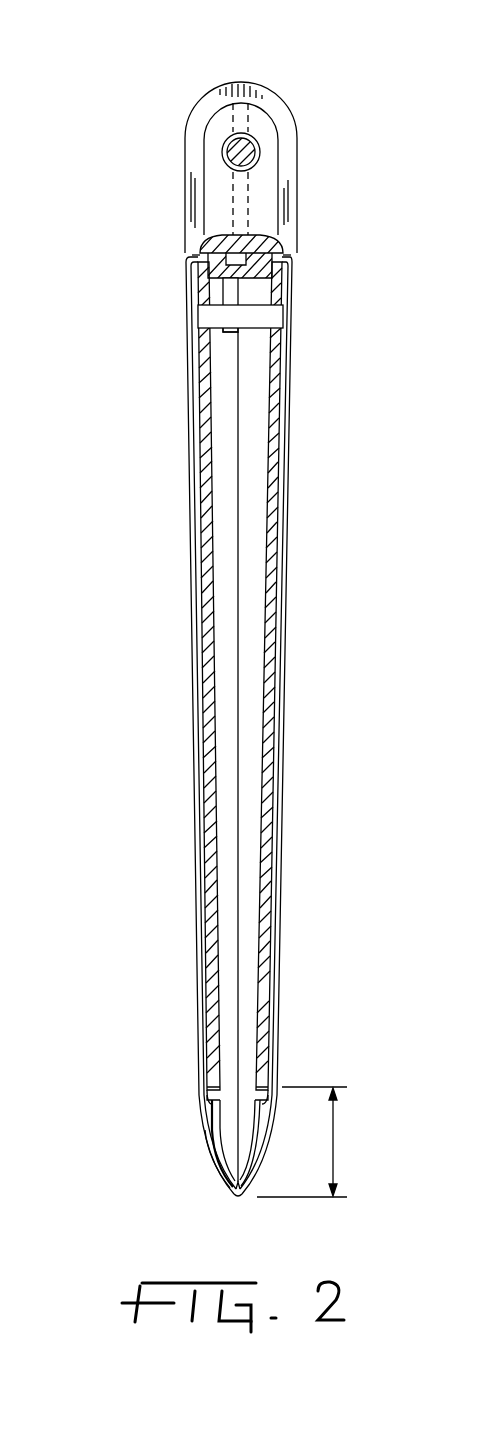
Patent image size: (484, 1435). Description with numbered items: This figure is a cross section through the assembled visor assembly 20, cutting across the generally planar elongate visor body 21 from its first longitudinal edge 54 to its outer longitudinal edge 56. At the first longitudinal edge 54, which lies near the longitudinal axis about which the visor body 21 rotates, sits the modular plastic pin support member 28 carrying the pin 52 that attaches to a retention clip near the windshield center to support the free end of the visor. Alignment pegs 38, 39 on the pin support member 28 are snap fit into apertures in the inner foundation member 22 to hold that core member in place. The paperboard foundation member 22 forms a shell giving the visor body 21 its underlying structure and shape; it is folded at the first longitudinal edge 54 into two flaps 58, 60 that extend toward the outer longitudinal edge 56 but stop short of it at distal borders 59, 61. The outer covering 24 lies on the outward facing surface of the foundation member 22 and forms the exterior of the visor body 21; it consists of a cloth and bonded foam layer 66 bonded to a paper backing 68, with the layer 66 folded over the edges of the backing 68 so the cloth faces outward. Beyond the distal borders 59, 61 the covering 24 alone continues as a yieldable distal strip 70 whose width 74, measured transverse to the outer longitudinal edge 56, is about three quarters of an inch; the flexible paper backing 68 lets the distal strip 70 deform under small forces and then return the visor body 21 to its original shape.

The visor assembly 20 is at (172, 88).
The first longitudinal edge 54 is at (243, 79).
The pin 52 is at (222, 143).
The pin support member 28 is at (262, 187).
The alignment peg 39 is at (284, 316).
The alignment peg 38 is at (203, 318).
The inner foundation member 22 is at (203, 578).
The outer covering 24 is at (183, 640).
The flap 58 is at (237, 676).
The flap 60 is at (273, 737).
The visor body 21 is at (185, 867).
The cloth and bonded foam layer 66 is at (197, 925).
The paper backing 68 is at (205, 984).
The distal border 61 is at (284, 1087).
The distal border 59 is at (213, 1103).
The distal strip 70 is at (190, 1148).
The outer longitudinal edge 56 is at (233, 1192).
The width 74 is at (346, 1146).